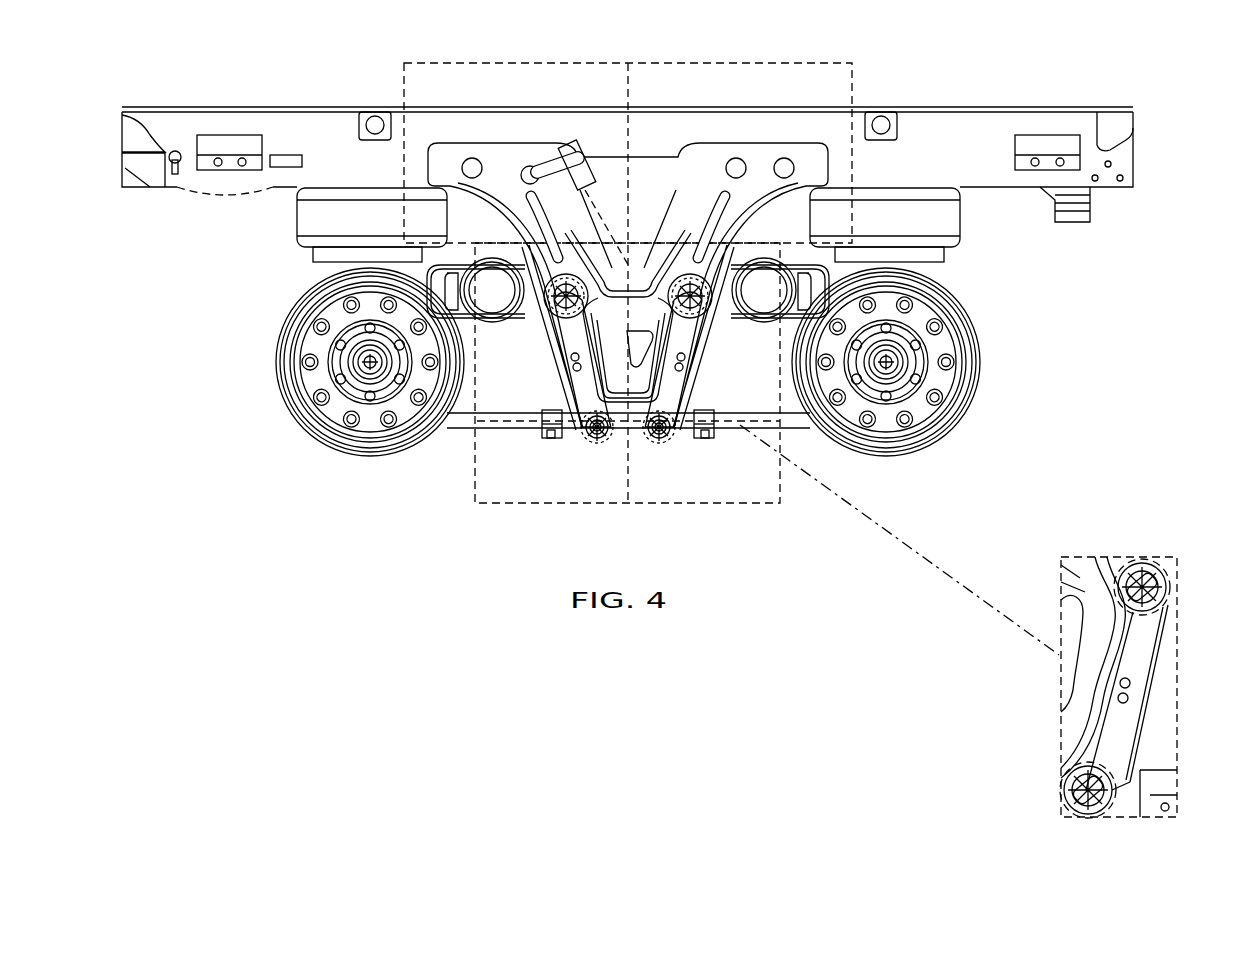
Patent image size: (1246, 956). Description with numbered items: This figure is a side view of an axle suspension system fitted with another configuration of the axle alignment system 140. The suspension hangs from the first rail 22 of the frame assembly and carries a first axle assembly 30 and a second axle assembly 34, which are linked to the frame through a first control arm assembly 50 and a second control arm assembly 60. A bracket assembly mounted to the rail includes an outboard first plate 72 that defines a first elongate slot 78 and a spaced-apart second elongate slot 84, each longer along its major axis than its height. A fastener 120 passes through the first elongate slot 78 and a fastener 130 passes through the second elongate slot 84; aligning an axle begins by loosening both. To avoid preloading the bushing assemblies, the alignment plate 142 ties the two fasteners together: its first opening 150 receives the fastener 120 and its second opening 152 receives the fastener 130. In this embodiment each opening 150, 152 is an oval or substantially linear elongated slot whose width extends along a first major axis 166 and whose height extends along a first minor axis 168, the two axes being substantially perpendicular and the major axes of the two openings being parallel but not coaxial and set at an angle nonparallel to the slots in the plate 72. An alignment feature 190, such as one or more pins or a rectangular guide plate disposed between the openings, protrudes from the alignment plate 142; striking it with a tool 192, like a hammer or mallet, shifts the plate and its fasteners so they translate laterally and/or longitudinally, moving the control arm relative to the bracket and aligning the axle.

The first rail 22 is at (153, 204).
The first axle assembly 30 is at (890, 457).
The second axle assembly 34 is at (380, 457).
The first control arm assembly 50 is at (531, 428).
The second control arm assembly 60 is at (504, 259).
The first plate 72 is at (636, 287).
The first elongate slot 78 is at (573, 443).
The second elongate slot 84 is at (540, 320).
The fastener 120 is at (597, 439).
The fastener 130 is at (613, 361).
The axle alignment system 140 is at (650, 64).
The alignment plate 142 is at (574, 405).
The first opening 150 is at (598, 442).
The second opening 152 is at (682, 278).
The first major axis 166 is at (568, 280).
The first minor axis 168 is at (580, 284).
The alignment feature 190 is at (570, 359).
The tool 192 is at (570, 140).